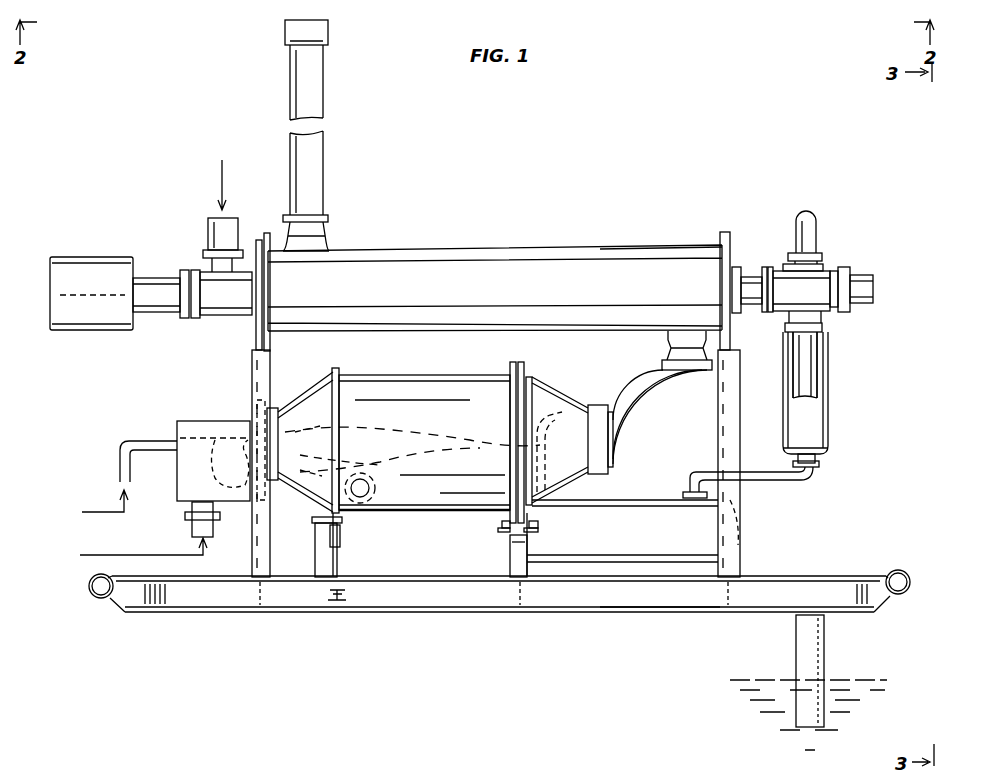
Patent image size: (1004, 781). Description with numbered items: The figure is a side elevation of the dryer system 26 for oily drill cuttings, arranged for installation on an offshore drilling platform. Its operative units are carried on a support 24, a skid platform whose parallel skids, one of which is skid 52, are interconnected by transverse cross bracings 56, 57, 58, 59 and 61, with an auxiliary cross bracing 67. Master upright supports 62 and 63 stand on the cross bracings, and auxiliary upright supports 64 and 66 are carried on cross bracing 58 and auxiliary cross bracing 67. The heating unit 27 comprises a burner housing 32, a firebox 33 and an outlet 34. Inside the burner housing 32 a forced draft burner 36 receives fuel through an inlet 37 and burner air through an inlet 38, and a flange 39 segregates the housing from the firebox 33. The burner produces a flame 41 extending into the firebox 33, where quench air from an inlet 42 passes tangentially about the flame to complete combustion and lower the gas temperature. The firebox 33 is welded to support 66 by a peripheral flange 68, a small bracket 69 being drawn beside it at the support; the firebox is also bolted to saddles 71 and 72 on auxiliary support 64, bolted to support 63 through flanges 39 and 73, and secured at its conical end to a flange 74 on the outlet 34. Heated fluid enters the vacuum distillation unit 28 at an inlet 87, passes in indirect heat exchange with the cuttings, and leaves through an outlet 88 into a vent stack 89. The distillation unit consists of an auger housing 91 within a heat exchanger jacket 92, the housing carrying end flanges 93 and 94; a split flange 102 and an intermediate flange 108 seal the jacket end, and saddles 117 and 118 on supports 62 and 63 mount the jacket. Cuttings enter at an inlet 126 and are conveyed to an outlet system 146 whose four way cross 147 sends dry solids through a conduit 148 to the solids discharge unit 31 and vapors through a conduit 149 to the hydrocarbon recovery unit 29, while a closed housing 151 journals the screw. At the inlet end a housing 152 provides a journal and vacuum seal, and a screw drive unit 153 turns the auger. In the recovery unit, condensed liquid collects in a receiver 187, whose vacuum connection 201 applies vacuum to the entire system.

The support 24 is at (848, 576).
The dryer system 26 is at (605, 124).
The heating unit 27 is at (469, 368).
The vacuum distillation unit 28 is at (490, 249).
The hydrocarbon recovery unit 29 is at (830, 446).
The solids discharge unit 31 is at (818, 385).
The burner housing 32 is at (238, 492).
The firebox 33 is at (430, 543).
The outlet 34 is at (646, 445).
The forced draft burner 36 is at (218, 430).
The inlet 37 is at (120, 465).
The inlet 38 is at (195, 508).
The flange 39 is at (256, 400).
The flame 41 is at (381, 434).
The inlet 42 is at (378, 490).
The skid 52 is at (661, 598).
The cross bracing 56 is at (908, 592).
The cross bracing 57 is at (727, 590).
The cross bracing 58 is at (526, 598).
The cross bracing 59 is at (258, 598).
The cross bracing 61 is at (93, 598).
The master upright support 62 is at (733, 500).
The master upright support 63 is at (266, 558).
The auxiliary upright support 64 is at (515, 556).
The auxiliary upright support 66 is at (316, 562).
The auxiliary cross bracing 67 is at (340, 602).
The peripheral flange 68 is at (342, 518).
The bracket 69 is at (340, 545).
The saddle 71 is at (538, 520).
The saddle 72 is at (502, 522).
The flange 73 is at (264, 498).
The flange 74 is at (613, 468).
The inlet 87 is at (662, 356).
The outlet 88 is at (328, 230).
The vent stack 89 is at (328, 82).
The auger housing 91 is at (750, 305).
The heat exchanger jacket 92 is at (668, 248).
The flange 93 is at (769, 270).
The flange 94 is at (190, 275).
The split flange 102 is at (737, 267).
The intermediate flange 108 is at (725, 232).
The saddle 117 is at (714, 330).
The saddle 118 is at (271, 348).
The inlet 126 is at (206, 240).
The outlet system 146 is at (834, 266).
The four way cross 147 is at (823, 298).
The conduit 148 is at (793, 360).
The conduit 149 is at (812, 222).
The closed housing 151 is at (873, 290).
The housing 152 is at (161, 312).
The screw drive unit 153 is at (96, 257).
The receiver 187 is at (610, 556).
The vacuum connection 201 is at (541, 470).